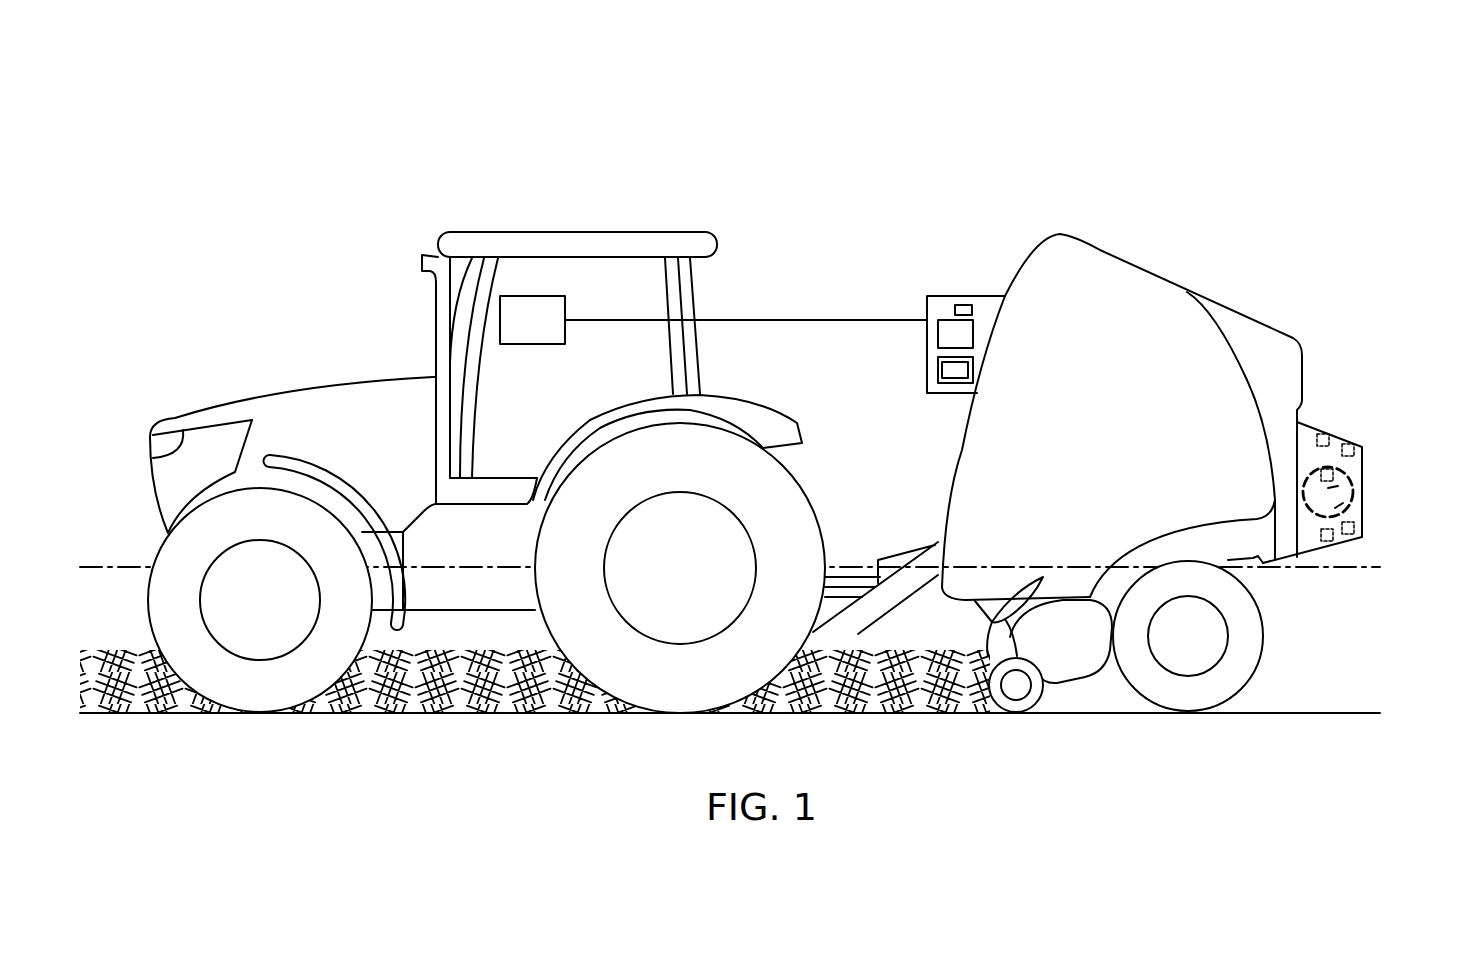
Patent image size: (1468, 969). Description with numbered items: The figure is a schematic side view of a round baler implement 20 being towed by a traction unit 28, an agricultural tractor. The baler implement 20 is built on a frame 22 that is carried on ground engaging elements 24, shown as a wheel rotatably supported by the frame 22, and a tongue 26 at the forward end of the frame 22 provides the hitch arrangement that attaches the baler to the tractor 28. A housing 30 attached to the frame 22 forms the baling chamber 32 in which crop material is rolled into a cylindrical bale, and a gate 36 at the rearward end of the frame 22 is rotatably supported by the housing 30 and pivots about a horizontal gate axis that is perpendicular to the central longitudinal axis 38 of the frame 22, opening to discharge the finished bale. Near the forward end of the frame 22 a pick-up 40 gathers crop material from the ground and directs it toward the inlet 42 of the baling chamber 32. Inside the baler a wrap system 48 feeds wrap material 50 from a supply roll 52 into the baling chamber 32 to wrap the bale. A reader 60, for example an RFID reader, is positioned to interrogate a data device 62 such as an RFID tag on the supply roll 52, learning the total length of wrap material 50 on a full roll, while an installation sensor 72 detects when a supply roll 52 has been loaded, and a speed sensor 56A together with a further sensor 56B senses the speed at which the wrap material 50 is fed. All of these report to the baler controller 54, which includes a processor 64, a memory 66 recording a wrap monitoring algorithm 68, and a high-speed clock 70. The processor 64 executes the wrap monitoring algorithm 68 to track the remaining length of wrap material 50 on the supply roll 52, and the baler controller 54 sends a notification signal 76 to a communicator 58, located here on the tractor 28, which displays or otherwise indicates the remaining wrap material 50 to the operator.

The baler implement 20 is at (1153, 184).
The frame 22 is at (1231, 530).
The ground engaging elements 24 is at (1205, 690).
The tongue 26 is at (862, 603).
The traction unit 28 is at (571, 232).
The housing 30 is at (1256, 316).
The baling chamber 32 is at (1138, 356).
The gate 36 is at (1303, 373).
The central longitudinal axis 38 is at (1287, 570).
The pick-up 40 is at (991, 661).
The inlet 42 is at (990, 630).
The wrap system 48 is at (1368, 454).
The wrap material 50 is at (1365, 517).
The supply roll 52 is at (1362, 472).
The baler controller 54 is at (927, 342).
The speed sensor 56A is at (1335, 552).
The sensor 56B is at (1355, 543).
The communicator 58 is at (548, 334).
The reader 60 is at (1323, 430).
The data device 62 is at (1367, 513).
The processor 64 is at (946, 328).
The memory 66 is at (938, 364).
The wrap monitoring algorithm 68 is at (948, 372).
The high-speed clock 70 is at (957, 306).
The installation sensor 72 is at (1350, 443).
The notification signal 76 is at (784, 318).